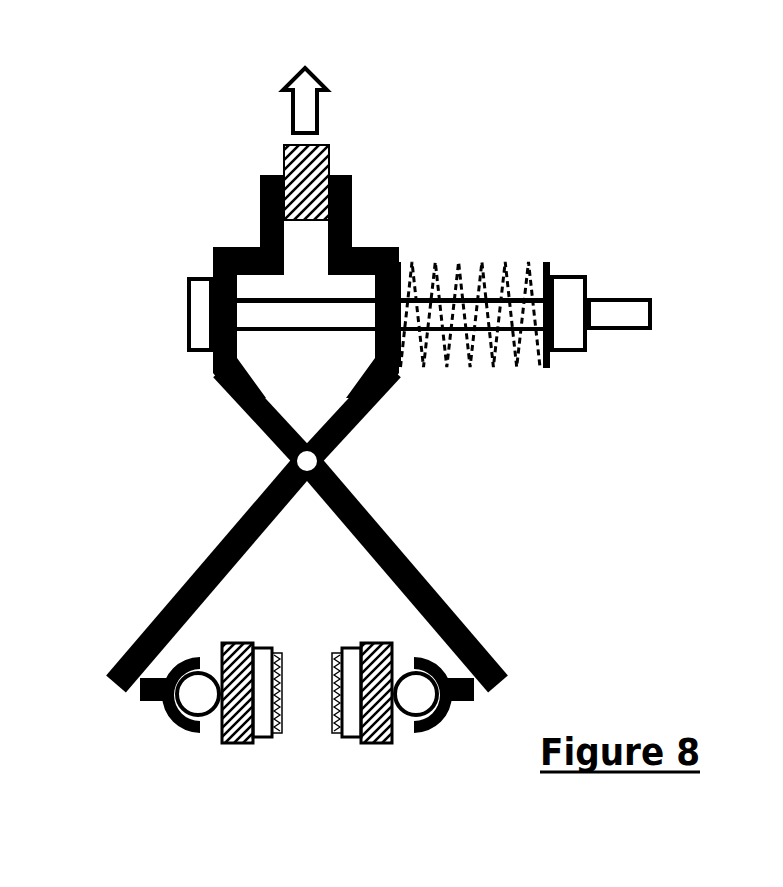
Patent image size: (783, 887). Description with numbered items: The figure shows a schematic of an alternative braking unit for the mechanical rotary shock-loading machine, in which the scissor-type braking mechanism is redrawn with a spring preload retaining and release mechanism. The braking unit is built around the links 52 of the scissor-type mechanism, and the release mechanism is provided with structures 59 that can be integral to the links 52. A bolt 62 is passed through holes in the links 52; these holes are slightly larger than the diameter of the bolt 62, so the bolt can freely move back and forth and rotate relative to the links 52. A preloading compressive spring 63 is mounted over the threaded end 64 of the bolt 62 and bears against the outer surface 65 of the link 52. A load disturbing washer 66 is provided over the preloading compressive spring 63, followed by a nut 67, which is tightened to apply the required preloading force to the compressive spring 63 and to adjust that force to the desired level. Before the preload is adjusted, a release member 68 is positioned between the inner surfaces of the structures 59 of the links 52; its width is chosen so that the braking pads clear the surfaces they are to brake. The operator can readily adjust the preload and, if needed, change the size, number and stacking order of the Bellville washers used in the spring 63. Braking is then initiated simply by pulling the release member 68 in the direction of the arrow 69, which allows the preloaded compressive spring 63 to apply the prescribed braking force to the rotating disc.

The links 52 is at (208, 551).
The structures 59 is at (253, 218).
The bolt 62 is at (283, 313).
The preloading compressive spring 63 is at (492, 373).
The threaded end 64 is at (623, 310).
The outer surface 65 is at (402, 257).
The load disturbing washer 66 is at (555, 258).
The nut 67 is at (568, 327).
The release member 68 is at (335, 153).
The arrow 69 is at (282, 90).